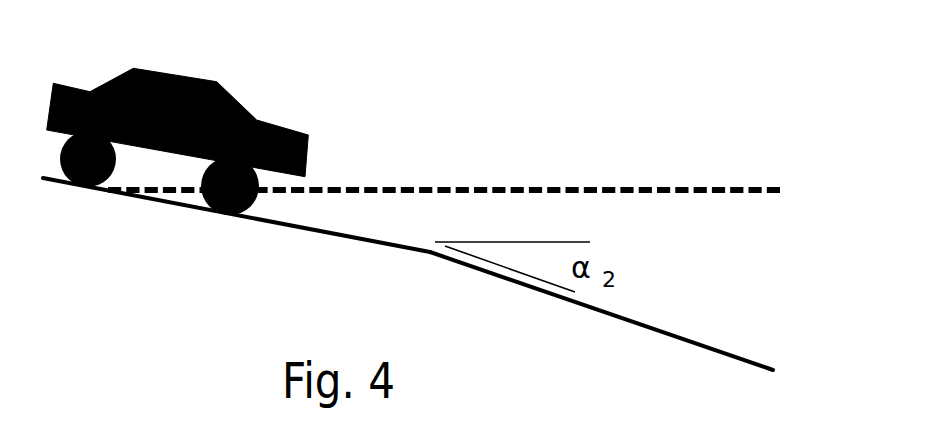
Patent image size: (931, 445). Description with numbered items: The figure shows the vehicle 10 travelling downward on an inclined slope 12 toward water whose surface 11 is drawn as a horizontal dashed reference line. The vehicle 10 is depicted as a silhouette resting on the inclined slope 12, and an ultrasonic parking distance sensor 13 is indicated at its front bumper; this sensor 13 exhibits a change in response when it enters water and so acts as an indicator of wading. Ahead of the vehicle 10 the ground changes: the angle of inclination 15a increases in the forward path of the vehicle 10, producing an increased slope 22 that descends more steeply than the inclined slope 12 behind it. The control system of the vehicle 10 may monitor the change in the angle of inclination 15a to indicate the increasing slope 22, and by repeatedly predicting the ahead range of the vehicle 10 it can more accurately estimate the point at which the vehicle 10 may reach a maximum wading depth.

The vehicle 10 is at (260, 106).
The water surface 11 is at (668, 188).
The inclined slope 12 is at (178, 203).
The ultrasonic parking distance sensor 13 is at (320, 165).
The angle of inclination 15a is at (518, 262).
The increased slope 22 is at (643, 328).